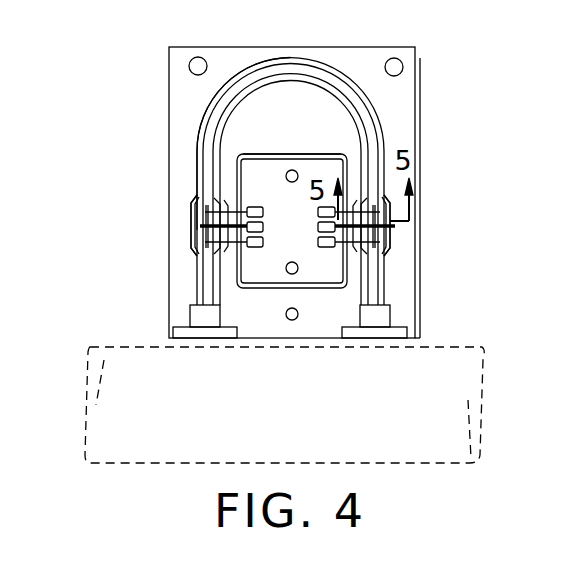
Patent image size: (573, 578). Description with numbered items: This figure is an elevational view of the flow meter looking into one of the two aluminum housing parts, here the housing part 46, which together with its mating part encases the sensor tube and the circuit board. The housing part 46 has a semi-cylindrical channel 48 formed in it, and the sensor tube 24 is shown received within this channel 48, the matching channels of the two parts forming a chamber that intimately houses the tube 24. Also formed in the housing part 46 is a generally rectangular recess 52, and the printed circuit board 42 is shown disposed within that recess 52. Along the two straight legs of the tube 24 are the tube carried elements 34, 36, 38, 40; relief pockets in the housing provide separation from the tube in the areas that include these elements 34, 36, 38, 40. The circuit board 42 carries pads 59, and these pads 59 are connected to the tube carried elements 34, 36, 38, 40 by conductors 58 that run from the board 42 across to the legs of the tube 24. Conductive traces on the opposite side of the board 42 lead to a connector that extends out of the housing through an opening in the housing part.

The sensor tube 24 is at (258, 76).
The tube carried element 34 is at (195, 240).
The tube carried element 36 is at (203, 218).
The tube carried element 38 is at (388, 222).
The tube carried element 40 is at (390, 233).
The circuit board 42 is at (307, 167).
The housing part 46 is at (169, 78).
The semi-cylindrical channel 48 is at (201, 122).
The rectangular recess 52 is at (287, 155).
The conductor 58 is at (228, 205).
The pad 59 is at (252, 248).